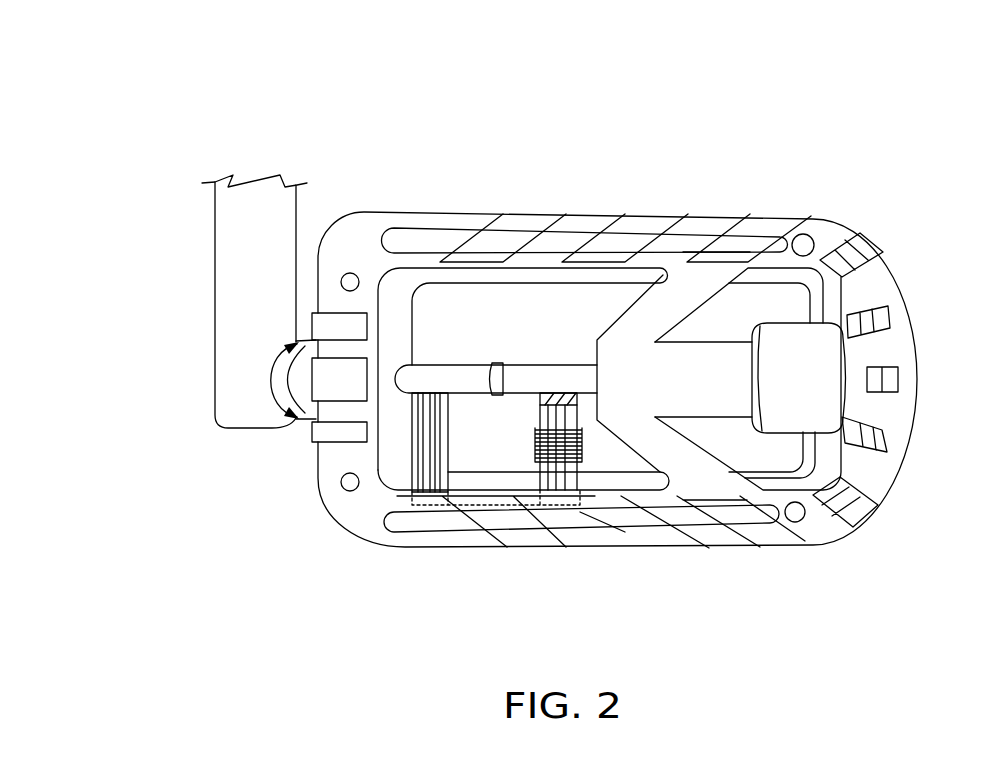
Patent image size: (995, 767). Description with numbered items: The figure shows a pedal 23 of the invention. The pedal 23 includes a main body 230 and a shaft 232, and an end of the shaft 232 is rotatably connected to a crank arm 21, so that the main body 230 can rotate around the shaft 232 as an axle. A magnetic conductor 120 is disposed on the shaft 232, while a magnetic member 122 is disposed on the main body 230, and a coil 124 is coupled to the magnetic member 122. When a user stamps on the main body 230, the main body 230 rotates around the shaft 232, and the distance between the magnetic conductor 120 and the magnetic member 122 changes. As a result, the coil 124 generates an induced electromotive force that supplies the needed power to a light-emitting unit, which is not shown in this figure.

The crank arm 21 is at (213, 243).
The pedal 23 is at (424, 93).
The main body 230 is at (765, 217).
The shaft 232 is at (450, 377).
The magnetic conductor 120 is at (567, 397).
The magnetic member 122 is at (412, 477).
The coil 124 is at (578, 450).